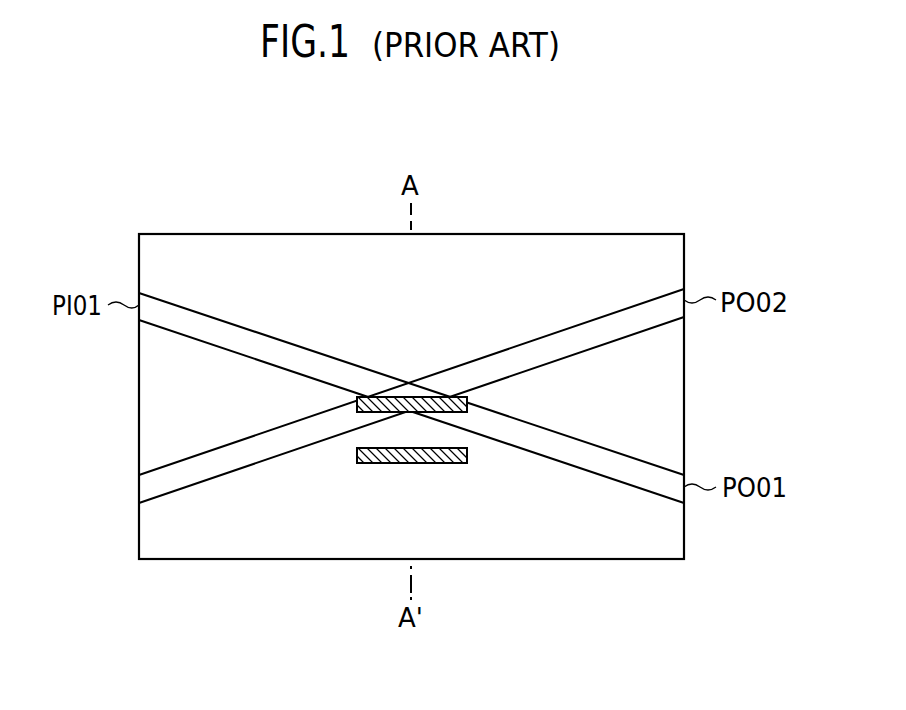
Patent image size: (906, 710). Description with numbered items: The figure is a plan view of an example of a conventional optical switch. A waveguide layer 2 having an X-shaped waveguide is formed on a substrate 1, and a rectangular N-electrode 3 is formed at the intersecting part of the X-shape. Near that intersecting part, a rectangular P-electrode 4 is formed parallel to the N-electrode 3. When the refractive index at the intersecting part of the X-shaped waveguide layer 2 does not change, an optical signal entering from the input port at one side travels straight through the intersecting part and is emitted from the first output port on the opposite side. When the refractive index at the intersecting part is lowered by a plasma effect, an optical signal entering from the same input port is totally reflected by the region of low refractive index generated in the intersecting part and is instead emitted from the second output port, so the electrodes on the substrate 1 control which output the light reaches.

The substrate 1 is at (172, 234).
The waveguide layer 2 is at (606, 325).
The N-electrode 3 is at (387, 400).
The P-electrode 4 is at (455, 462).